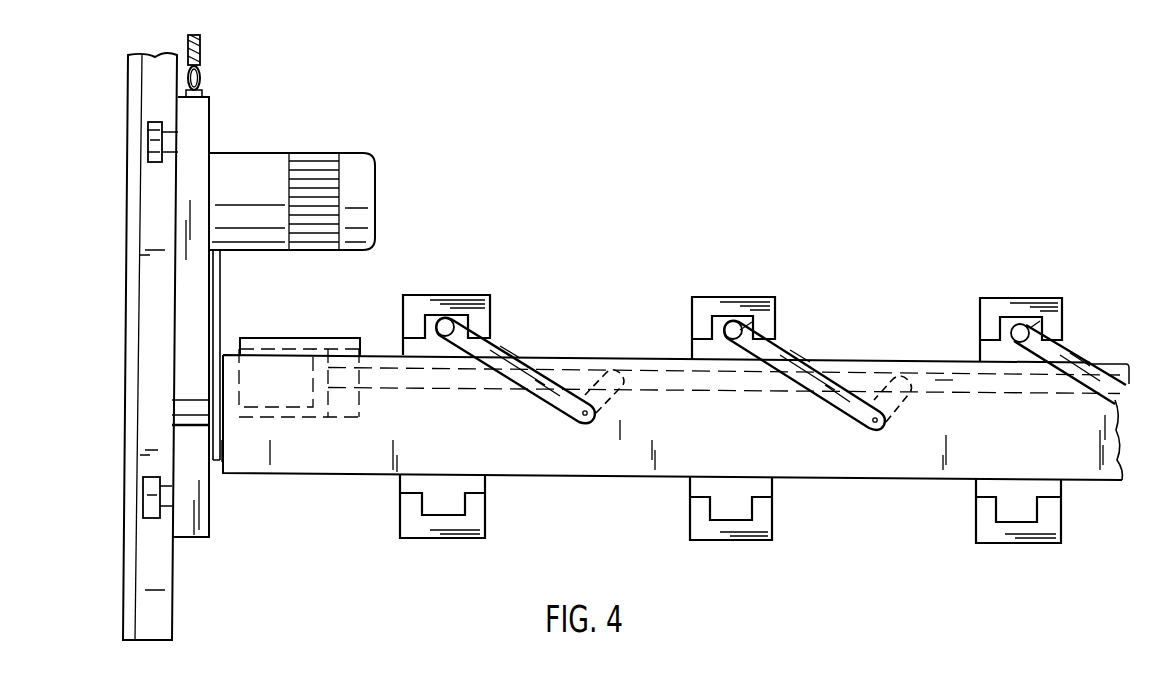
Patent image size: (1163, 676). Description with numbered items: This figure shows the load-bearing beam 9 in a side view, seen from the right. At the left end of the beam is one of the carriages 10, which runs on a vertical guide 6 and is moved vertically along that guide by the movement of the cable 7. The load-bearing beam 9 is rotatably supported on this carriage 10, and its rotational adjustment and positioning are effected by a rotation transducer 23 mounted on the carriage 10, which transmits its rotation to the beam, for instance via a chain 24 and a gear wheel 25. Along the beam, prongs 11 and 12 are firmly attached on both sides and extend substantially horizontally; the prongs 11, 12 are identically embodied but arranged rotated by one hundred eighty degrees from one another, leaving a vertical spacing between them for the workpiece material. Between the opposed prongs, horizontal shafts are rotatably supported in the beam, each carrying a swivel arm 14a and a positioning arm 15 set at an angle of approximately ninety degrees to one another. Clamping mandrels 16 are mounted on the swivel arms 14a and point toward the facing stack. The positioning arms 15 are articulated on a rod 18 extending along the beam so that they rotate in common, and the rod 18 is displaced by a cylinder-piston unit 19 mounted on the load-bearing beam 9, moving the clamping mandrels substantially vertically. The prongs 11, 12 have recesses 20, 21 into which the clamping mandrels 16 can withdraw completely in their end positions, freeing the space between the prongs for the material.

The vertical guide 6 is at (165, 582).
The cable 7 is at (203, 46).
The load-bearing beam 9 is at (572, 455).
The carriage 10 is at (196, 127).
The prong 11 is at (730, 518).
The prong 12 is at (730, 310).
The swivel arm 14a is at (503, 357).
The positioning arm 15 is at (595, 378).
The clamping mandrel 16 is at (445, 318).
The rod 18 is at (942, 380).
The cylinder-piston unit 19 is at (307, 412).
The recess 20 is at (440, 505).
The recess 21 is at (748, 320).
The rotation transducer 23 is at (358, 172).
The chain 24 is at (216, 273).
The gear wheel 25 is at (216, 462).